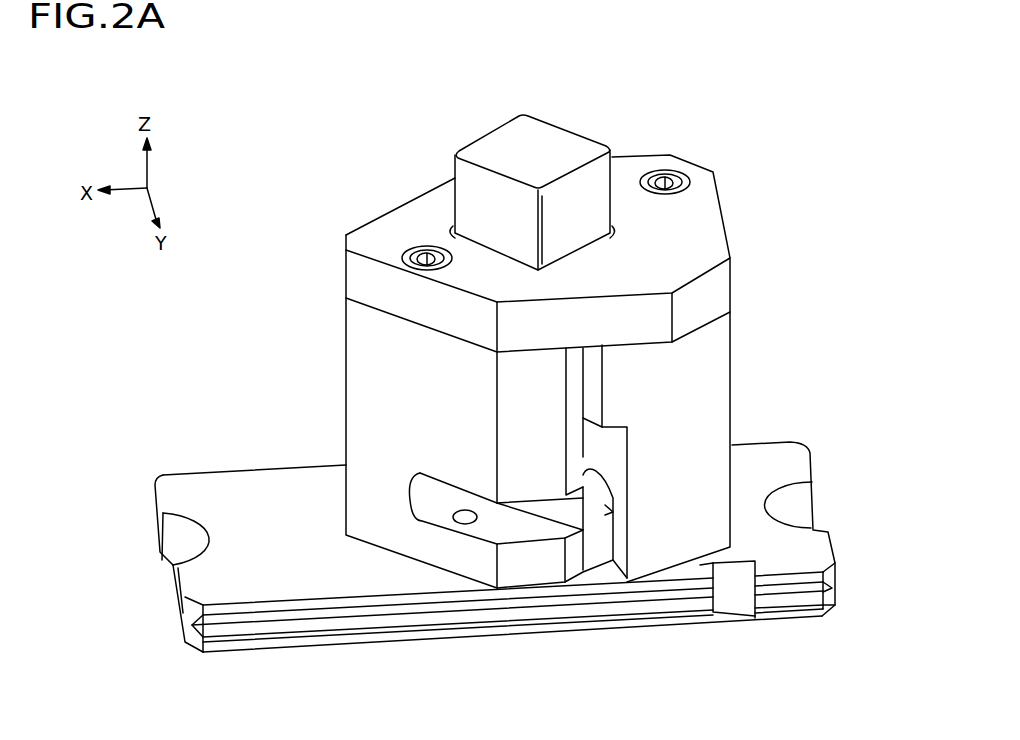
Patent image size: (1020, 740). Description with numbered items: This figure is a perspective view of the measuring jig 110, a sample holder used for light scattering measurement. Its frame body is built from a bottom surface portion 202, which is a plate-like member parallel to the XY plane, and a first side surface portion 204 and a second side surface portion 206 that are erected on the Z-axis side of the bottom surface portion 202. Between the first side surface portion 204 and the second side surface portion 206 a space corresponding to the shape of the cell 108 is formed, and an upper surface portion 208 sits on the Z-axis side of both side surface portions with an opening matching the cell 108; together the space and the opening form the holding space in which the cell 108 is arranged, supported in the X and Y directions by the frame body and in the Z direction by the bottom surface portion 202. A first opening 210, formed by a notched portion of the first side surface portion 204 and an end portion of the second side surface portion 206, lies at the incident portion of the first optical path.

The measuring jig 110 is at (665, 92).
The cell 108 is at (572, 132).
The upper surface portion 208 is at (727, 227).
The first side surface portion 204 is at (345, 348).
The second side surface portion 206 is at (732, 365).
The first opening 210 is at (490, 517).
The bottom surface portion 202 is at (837, 590).